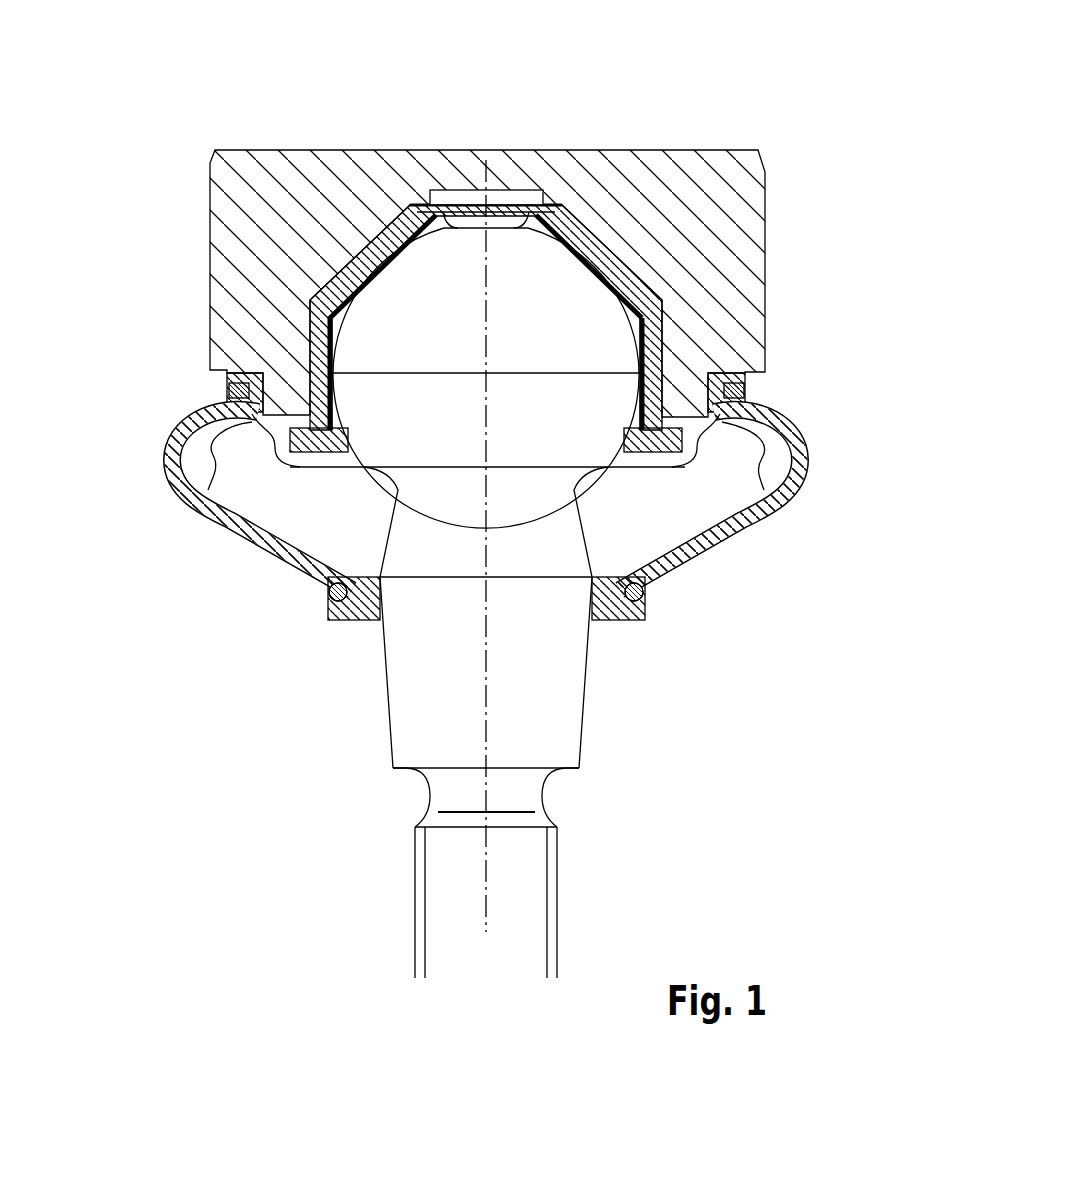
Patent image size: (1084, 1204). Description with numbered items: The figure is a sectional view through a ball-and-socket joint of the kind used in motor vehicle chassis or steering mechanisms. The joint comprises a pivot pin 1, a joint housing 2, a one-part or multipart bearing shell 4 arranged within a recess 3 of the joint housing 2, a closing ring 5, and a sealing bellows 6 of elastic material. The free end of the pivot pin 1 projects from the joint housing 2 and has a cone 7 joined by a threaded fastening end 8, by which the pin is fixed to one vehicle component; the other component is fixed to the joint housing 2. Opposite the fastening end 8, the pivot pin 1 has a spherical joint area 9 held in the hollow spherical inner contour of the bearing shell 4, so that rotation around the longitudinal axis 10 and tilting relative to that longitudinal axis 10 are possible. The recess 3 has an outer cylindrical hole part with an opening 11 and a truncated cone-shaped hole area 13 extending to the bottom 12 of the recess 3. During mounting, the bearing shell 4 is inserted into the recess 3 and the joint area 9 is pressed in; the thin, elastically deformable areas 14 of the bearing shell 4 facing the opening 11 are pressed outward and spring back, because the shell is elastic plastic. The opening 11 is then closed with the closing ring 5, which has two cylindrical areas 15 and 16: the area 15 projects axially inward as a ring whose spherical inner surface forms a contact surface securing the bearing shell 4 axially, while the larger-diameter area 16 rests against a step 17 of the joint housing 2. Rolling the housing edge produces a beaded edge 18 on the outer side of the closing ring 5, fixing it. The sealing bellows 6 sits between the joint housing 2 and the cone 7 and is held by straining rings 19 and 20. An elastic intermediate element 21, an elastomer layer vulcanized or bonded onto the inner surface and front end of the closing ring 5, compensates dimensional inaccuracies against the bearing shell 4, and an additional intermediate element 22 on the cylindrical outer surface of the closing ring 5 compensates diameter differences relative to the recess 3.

The pivot pin 1 is at (453, 792).
The joint housing 2 is at (247, 178).
The recess 3 is at (497, 236).
The bearing shell 4 is at (393, 204).
The closing ring 5 is at (690, 375).
The sealing bellows 6 is at (700, 548).
The cone 7 is at (437, 695).
The threaded fastening end 8 is at (452, 887).
The spherical joint area 9 is at (380, 297).
The longitudinal axis 10 is at (486, 932).
The opening 11 is at (332, 460).
The bottom 12 is at (500, 196).
The truncated cone-shaped hole area 13 is at (622, 250).
The thin, elastically deformable areas 14 is at (663, 350).
The cylindrical area 15 is at (678, 440).
The cylindrical area 16 is at (762, 470).
The step 17 is at (253, 430).
The beaded edge 18 is at (742, 524).
The straining ring 19 is at (288, 415).
The straining ring 20 is at (328, 590).
The elastic intermediate element 21 is at (630, 396).
The additional intermediate element 22 is at (330, 390).